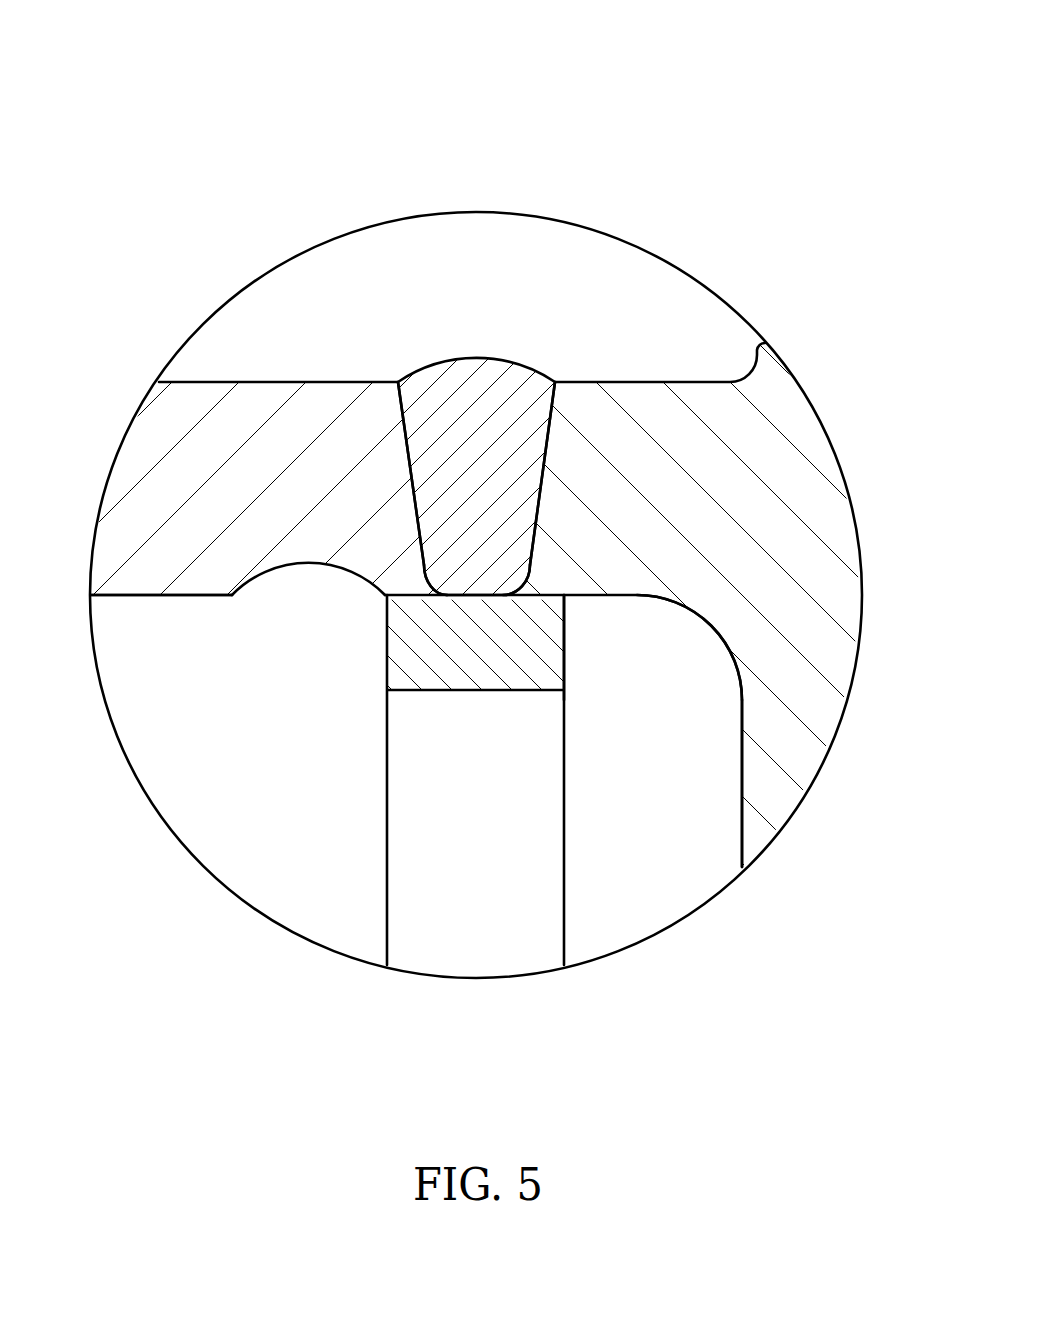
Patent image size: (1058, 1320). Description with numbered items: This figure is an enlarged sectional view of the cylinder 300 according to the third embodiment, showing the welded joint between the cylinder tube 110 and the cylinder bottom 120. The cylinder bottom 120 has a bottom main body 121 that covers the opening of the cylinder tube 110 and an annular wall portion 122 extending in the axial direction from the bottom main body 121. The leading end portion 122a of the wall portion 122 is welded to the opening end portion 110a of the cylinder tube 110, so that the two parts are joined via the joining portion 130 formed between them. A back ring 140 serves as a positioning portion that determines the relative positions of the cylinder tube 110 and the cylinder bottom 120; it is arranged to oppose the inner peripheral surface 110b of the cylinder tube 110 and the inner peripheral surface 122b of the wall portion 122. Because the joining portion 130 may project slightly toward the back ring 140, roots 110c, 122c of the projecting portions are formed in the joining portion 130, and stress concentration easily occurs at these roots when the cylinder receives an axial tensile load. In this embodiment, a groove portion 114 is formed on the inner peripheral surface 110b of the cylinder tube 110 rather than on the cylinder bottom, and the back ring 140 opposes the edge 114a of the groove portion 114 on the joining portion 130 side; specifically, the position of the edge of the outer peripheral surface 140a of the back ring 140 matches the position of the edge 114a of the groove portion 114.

The cylinder 300 is at (713, 328).
The cylinder tube 110 is at (215, 380).
The opening end portion 110a is at (407, 425).
The inner peripheral surface 110b is at (140, 598).
The root 110c is at (445, 597).
The groove portion 114 is at (246, 600).
The edge 114a is at (386, 598).
The cylinder bottom 120 is at (724, 378).
The bottom main body 121 is at (800, 790).
The wall portion 122 is at (653, 417).
The leading end portion 122a is at (547, 427).
The inner peripheral surface 122b is at (624, 598).
The root 122c is at (503, 595).
The joining portion 130 is at (463, 370).
The back ring 140 is at (502, 667).
The outer peripheral surface 140a is at (553, 597).